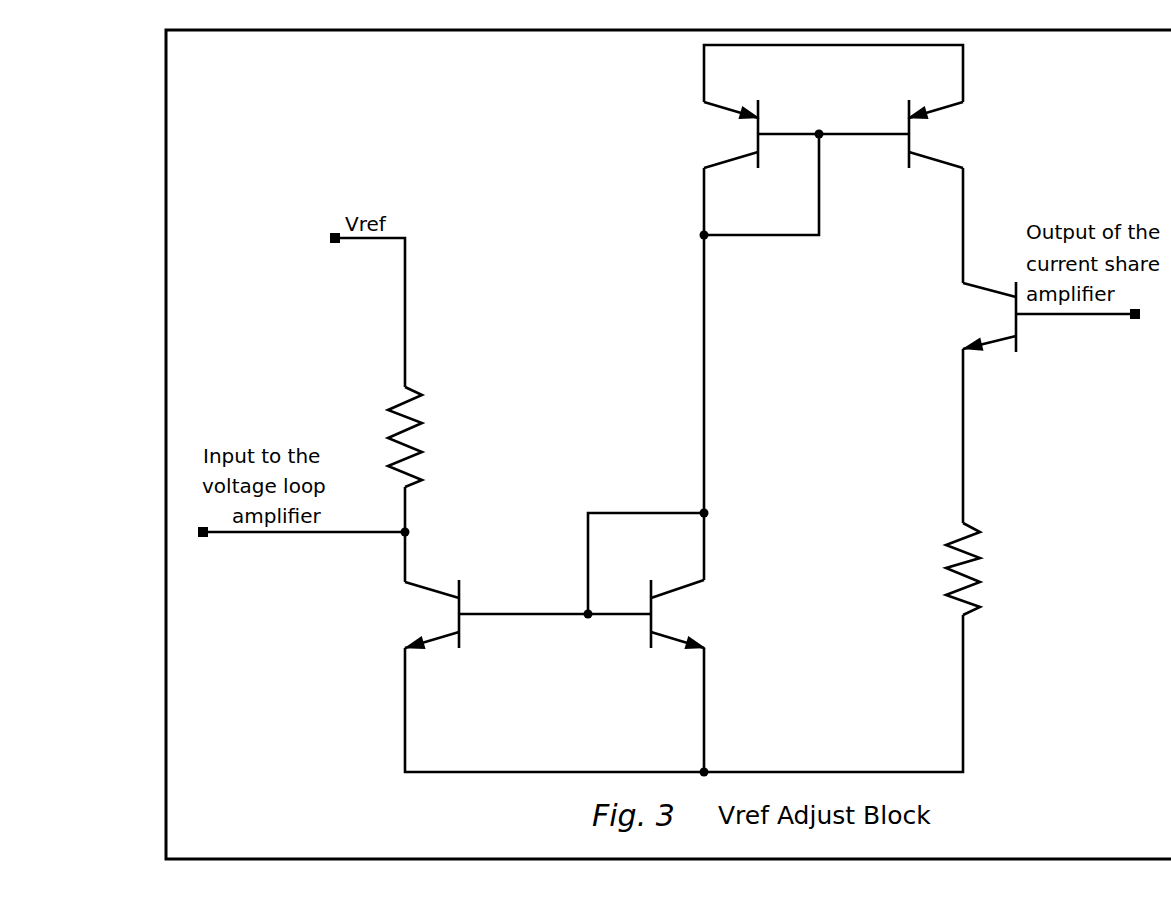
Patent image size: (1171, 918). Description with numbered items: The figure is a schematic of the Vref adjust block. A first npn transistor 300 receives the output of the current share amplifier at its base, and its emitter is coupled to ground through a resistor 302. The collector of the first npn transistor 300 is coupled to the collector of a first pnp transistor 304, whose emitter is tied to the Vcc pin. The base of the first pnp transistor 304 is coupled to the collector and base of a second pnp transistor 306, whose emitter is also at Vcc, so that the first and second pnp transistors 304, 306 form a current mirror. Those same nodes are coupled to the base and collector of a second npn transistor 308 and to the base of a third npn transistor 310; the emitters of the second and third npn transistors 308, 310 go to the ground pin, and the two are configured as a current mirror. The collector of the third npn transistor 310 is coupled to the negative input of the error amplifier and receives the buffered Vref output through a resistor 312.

The first npn transistor 300 is at (990, 320).
The resistor 302 is at (968, 544).
The first pnp transistor 304 is at (935, 148).
The second pnp transistor 306 is at (735, 137).
The second npn transistor 308 is at (665, 620).
The third npn transistor 310 is at (452, 617).
The resistor 312 is at (410, 391).